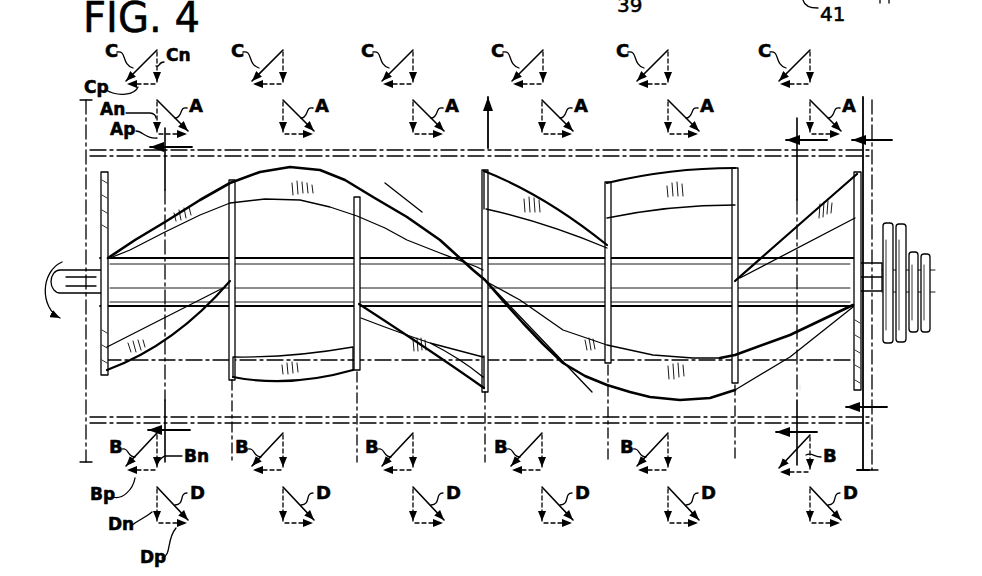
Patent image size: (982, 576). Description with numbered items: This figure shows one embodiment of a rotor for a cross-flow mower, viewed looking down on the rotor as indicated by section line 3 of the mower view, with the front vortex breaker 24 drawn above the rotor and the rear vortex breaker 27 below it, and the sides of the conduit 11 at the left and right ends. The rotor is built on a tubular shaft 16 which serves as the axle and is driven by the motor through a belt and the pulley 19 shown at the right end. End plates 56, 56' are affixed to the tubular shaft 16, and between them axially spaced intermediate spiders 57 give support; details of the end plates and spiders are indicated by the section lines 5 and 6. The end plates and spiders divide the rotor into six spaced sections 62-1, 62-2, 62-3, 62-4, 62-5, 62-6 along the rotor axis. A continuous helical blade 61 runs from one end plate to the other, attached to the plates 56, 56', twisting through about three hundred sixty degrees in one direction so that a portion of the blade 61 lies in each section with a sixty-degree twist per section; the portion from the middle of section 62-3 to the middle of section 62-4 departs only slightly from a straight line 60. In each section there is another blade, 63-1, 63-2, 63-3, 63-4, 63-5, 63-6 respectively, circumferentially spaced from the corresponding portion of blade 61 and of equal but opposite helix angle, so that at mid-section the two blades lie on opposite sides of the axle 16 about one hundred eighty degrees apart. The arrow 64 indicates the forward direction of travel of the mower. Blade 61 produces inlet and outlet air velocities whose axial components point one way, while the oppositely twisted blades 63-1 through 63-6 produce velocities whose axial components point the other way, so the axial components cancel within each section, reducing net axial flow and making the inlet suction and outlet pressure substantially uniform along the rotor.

The section line 3— 3 is at (178, 295).
The section line 5— 5 is at (872, 283).
The section line 6— 6 is at (794, 286).
The sides of the conduit 11 is at (85, 208).
The tubular shaft 16 is at (648, 257).
The pulley 19 is at (894, 229).
The front vortex breaker 24 is at (405, 157).
The rear vortex breaker 27 is at (444, 424).
The end plate 56 is at (122, 273).
The end plate 56' is at (838, 281).
The intermediate spiders 57 is at (353, 248).
The straight line 60 is at (410, 200).
The helical blade 61 is at (330, 170).
The rotor section 62-1 is at (187, 421).
The rotor section 62-2 is at (315, 417).
The rotor section 62-3 is at (438, 425).
The rotor section 62-4 is at (569, 413).
The rotor section 62-5 is at (688, 423).
The rotor section 62-6 is at (801, 400).
The blade 63-1 is at (158, 347).
The blade 63-2 is at (310, 373).
The blade 63-3 is at (436, 355).
The blade 63-4 is at (555, 197).
The blade 63-5 is at (657, 173).
The blade 63-6 is at (812, 213).
The arrow 64 is at (489, 141).